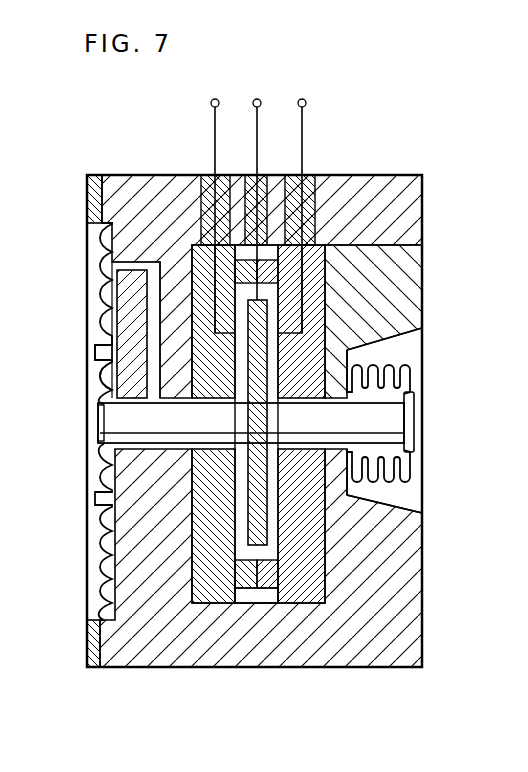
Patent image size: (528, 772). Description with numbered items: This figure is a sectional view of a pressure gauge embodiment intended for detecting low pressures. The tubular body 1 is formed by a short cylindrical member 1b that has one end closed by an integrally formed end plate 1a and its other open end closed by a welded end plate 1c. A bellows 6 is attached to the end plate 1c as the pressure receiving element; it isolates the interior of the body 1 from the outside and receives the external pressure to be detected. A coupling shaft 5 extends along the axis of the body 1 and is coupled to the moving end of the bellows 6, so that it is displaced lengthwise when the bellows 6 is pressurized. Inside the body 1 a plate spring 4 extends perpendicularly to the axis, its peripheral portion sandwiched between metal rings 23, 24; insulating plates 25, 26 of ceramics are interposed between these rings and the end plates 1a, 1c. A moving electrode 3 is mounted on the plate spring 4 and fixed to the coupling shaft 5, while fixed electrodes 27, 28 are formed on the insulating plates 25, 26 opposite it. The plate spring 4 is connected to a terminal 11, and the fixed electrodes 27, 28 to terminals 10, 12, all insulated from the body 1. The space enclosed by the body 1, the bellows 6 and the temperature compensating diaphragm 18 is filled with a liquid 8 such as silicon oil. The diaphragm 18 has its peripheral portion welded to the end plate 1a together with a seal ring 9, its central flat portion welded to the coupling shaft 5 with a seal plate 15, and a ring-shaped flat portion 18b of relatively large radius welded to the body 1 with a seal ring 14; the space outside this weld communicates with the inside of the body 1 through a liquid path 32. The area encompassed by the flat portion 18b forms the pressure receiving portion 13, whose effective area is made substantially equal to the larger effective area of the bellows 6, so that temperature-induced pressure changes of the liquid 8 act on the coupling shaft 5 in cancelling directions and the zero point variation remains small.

The tubular body 1 is at (472, 133).
The end plate 1a is at (150, 521).
The cylindrical member 1b is at (395, 182).
The end plate 1c is at (412, 270).
The moving electrode 3 is at (340, 506).
The plate spring 4 is at (265, 560).
The coupling shaft 5 is at (402, 432).
The bellows 6 is at (408, 380).
The liquid 8 is at (120, 322).
The seal ring 9 is at (95, 200).
The terminal 10 is at (218, 99).
The terminal 11 is at (259, 99).
The terminal 12 is at (304, 99).
The pressure receiving portion 13 is at (100, 378).
The seal ring 14 is at (97, 352).
The seal plate 15 is at (98, 432).
The temperature compensating diaphragm 18 is at (100, 258).
The ring-shaped flat portion 18b is at (100, 468).
The metal ring 23 is at (246, 585).
The metal ring 24 is at (266, 580).
The insulating plate 25 is at (213, 590).
The insulating plate 26 is at (306, 585).
The fixed electrode 27 is at (233, 537).
The fixed electrode 28 is at (268, 544).
The liquid path 32 is at (152, 292).